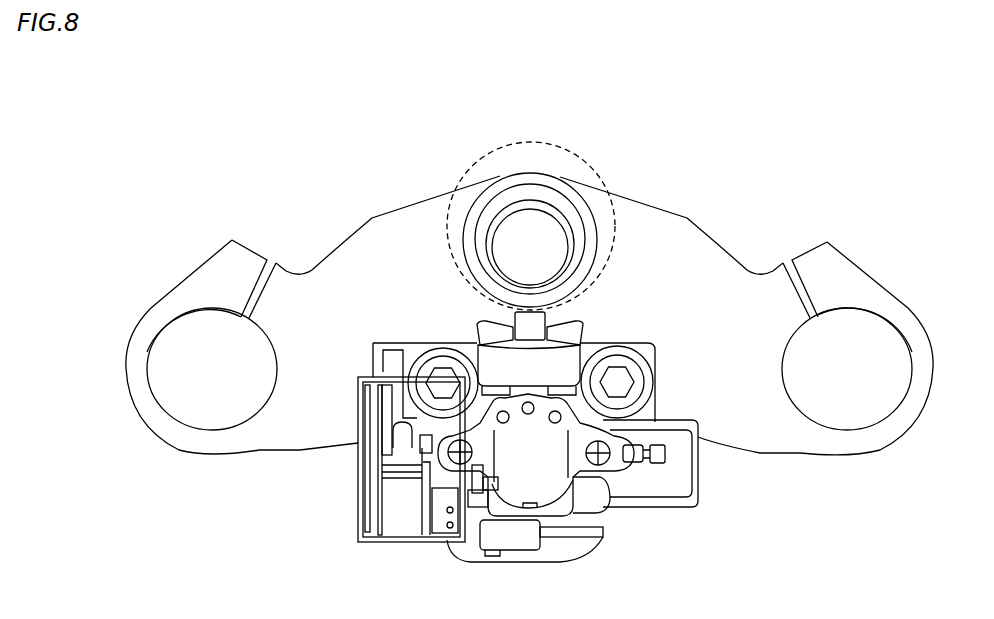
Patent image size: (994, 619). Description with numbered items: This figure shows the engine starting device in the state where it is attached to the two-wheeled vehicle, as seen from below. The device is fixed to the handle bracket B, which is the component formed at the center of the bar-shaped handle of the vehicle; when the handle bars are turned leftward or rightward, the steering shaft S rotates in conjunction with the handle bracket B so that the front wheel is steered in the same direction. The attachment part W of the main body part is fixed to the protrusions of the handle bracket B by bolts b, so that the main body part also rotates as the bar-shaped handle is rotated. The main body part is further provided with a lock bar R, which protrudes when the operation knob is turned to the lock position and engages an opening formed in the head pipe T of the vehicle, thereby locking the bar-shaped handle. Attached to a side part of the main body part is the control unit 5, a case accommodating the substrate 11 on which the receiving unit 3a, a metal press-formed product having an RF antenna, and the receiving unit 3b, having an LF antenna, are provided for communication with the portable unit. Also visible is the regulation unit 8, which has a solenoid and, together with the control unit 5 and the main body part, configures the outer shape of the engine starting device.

The handle bracket B is at (370, 232).
The steering shaft S is at (512, 186).
The head pipe T is at (582, 170).
The lock bar R is at (500, 333).
The attachment part W is at (594, 348).
The bolt b is at (441, 378).
The regulation unit 8 is at (690, 472).
The control unit 5 is at (360, 493).
The substrate 11 is at (370, 521).
The receiving unit 3a is at (405, 482).
The receiving unit 3b is at (446, 528).